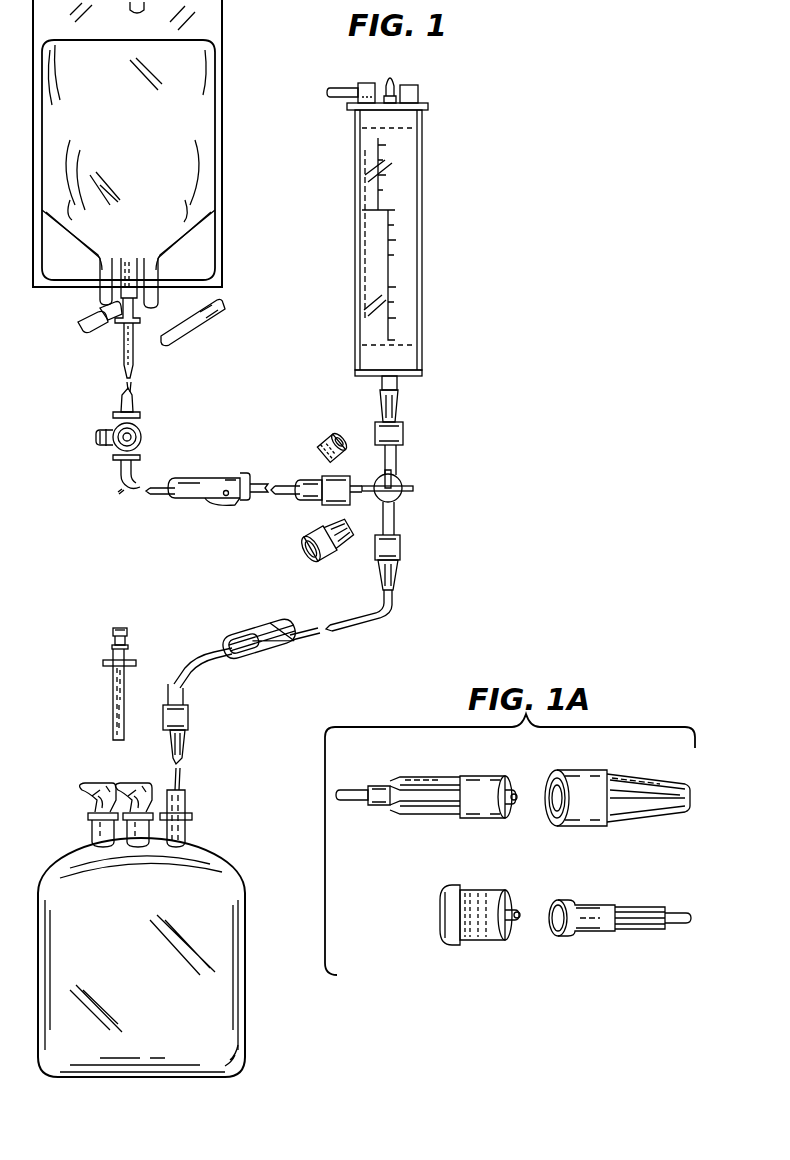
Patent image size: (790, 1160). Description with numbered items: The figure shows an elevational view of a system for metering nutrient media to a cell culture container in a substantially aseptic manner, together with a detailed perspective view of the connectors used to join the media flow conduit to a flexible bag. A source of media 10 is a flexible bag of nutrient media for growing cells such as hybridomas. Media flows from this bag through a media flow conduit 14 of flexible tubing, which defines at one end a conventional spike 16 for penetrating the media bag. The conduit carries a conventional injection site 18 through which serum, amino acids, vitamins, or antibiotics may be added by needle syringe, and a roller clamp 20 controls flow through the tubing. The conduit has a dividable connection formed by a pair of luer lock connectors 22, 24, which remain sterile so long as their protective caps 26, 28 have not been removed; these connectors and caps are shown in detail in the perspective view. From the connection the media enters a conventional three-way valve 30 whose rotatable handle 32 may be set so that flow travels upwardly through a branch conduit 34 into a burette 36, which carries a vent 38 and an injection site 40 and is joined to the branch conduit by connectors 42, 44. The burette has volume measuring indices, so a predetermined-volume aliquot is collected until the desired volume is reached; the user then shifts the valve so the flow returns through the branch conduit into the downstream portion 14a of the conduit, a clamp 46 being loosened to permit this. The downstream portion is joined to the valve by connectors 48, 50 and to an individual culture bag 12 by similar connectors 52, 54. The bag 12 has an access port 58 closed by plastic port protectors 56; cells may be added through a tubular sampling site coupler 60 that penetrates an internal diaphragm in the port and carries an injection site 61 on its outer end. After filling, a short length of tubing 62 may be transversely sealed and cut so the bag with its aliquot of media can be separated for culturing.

In FIG. 1, the source of media 10 is at (146, 151).
In FIG. 1, the bag 12 is at (156, 993).
In FIG. 1, the media flow conduit 14 is at (119, 493).
In FIG. 1A, the media flow conduit 14 is at (683, 913).
In FIG. 1, the downstream portion of conduit 14a is at (392, 614).
In FIG. 1, the spike 16 is at (133, 333).
In FIG. 1, the injection site 18 is at (142, 437).
In FIG. 1, the roller clamp 20 is at (222, 478).
In FIG. 1, the luer lock connector 22 is at (318, 481).
In FIG. 1A, the luer lock connector 22 is at (592, 932).
In FIG. 1, the luer lock connector 24 is at (345, 505).
In FIG. 1A, the luer lock connector 24 is at (432, 790).
In FIG. 1, the protective cap 26 is at (345, 415).
In FIG. 1A, the protective cap 26 is at (486, 945).
In FIG. 1, the protective cap 28 is at (308, 540).
In FIG. 1A, the protective cap 28 is at (598, 772).
In FIG. 1, the 3-way valve 30 is at (402, 483).
In FIG. 1, the rotatable handle 32 is at (395, 500).
In FIG. 1, the branch conduit 34 is at (397, 460).
In FIG. 1, the burette 36 is at (423, 258).
In FIG. 1, the vent 38 is at (368, 83).
In FIG. 1, the injection site 40 is at (420, 88).
In FIG. 1, the connector 42 is at (378, 432).
In FIG. 1, the connector 44 is at (397, 410).
In FIG. 1, the clamp 46 is at (268, 652).
In FIG. 1, the connector 48 is at (401, 545).
In FIG. 1, the connector 50 is at (398, 575).
In FIG. 1, the connector 52 is at (186, 742).
In FIG. 1, the connector 54 is at (189, 718).
In FIG. 1, the port protector 56 is at (95, 797).
In FIG. 1, the access port 58 is at (88, 822).
In FIG. 1, the sampling site coupler 60 is at (112, 655).
In FIG. 1, the injection site 61 is at (127, 632).
In FIG. 1, the short length of tubing 62 is at (182, 775).